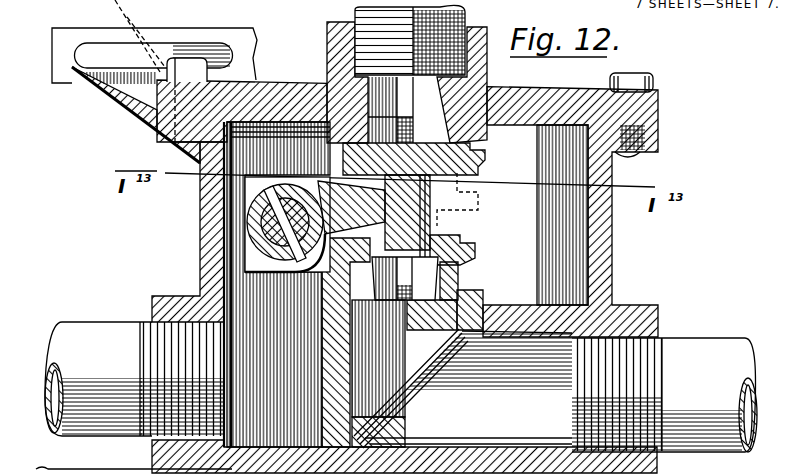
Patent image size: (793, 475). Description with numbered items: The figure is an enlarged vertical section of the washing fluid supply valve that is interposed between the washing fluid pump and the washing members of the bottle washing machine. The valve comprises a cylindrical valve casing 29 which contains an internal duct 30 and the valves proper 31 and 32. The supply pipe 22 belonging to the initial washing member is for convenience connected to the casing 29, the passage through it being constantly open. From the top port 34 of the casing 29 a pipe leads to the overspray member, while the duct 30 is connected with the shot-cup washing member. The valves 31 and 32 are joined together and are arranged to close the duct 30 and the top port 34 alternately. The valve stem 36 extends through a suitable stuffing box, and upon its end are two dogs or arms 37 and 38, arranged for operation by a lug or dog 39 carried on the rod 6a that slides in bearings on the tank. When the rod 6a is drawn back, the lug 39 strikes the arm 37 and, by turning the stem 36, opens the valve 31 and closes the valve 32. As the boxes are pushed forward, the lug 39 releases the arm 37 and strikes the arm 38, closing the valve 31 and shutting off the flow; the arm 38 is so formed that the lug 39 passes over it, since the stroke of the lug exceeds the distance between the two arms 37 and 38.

The rod 6a is at (62, 50).
The supply pipe 22 is at (401, 387).
The cylindrical valve casing 29 is at (606, 277).
The internal duct 30 is at (463, 388).
The valve 31 is at (467, 248).
The valve 32 is at (487, 158).
The top port 34 is at (340, 92).
The valve stem 36 is at (265, 228).
The arm 37 is at (119, 103).
The arm 38 is at (332, 110).
The lug 39 is at (158, 50).